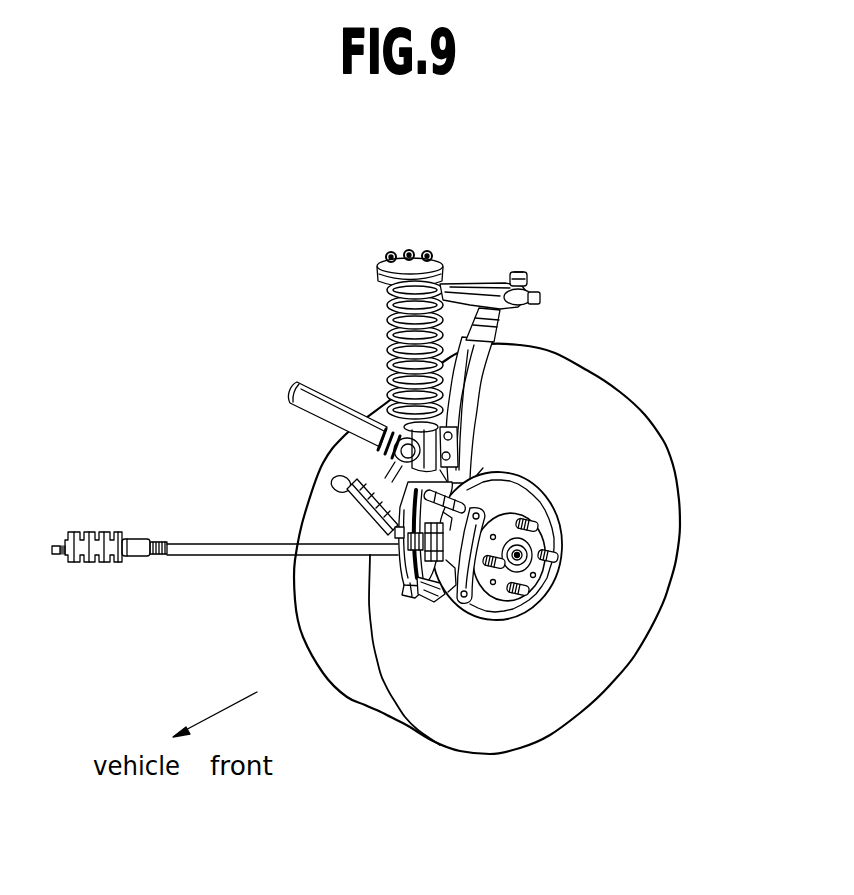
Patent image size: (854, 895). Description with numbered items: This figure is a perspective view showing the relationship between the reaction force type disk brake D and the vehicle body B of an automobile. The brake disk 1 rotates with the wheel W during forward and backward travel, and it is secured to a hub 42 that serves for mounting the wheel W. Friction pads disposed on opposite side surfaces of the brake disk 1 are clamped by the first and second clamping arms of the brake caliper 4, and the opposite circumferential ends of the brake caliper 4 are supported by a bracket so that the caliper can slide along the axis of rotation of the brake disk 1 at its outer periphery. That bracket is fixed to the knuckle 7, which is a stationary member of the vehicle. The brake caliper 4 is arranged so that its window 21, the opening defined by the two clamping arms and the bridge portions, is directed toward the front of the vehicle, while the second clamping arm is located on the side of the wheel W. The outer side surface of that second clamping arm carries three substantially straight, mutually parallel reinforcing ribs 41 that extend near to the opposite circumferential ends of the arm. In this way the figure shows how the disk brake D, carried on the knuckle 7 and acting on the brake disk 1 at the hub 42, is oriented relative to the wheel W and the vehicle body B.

The brake disk 1 is at (548, 574).
The brake caliper 4 is at (433, 603).
The reinforcing ribs 41 is at (425, 594).
The hub 42 is at (538, 523).
The knuckle 7 is at (470, 443).
The window 21 is at (396, 530).
The vehicle body B is at (585, 372).
The reaction force type disk brake D is at (388, 593).
The wheel W is at (672, 450).